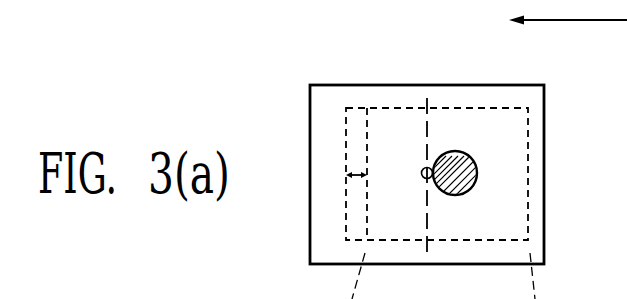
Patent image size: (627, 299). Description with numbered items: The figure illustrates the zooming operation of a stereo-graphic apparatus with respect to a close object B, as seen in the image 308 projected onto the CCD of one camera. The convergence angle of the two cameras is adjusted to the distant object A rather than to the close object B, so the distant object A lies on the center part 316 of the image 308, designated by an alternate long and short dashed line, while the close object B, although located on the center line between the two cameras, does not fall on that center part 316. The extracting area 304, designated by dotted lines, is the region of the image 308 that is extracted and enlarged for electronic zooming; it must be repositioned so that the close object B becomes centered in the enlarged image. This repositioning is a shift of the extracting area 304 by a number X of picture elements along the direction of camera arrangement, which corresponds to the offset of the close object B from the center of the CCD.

The extracting area 304 is at (528, 218).
The image 308 is at (310, 238).
The center part 316 is at (427, 108).
The number of picture elements X is at (350, 175).
The distant object A is at (421, 177).
The close object B is at (476, 170).